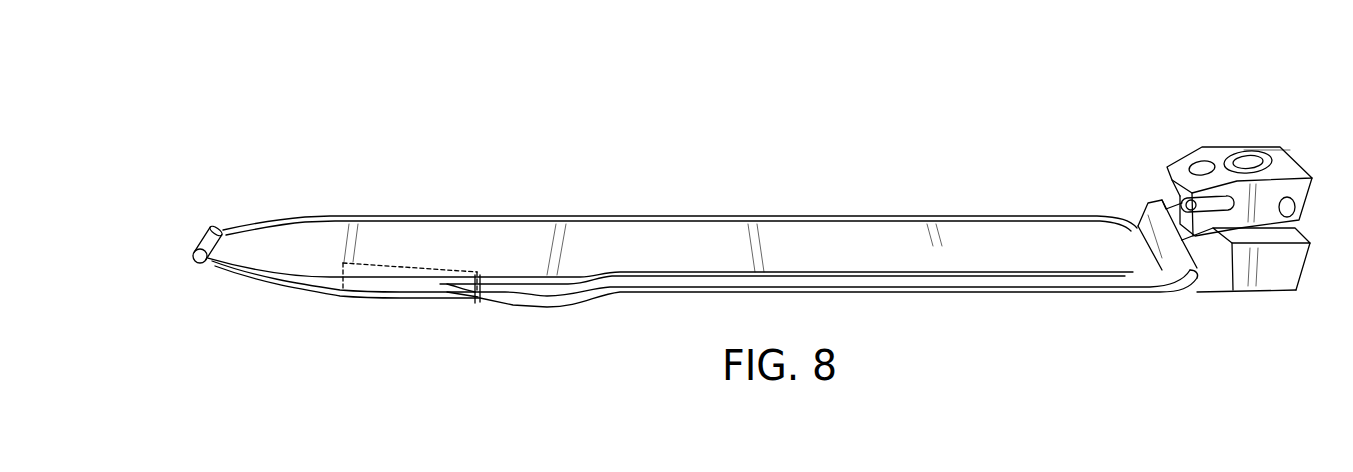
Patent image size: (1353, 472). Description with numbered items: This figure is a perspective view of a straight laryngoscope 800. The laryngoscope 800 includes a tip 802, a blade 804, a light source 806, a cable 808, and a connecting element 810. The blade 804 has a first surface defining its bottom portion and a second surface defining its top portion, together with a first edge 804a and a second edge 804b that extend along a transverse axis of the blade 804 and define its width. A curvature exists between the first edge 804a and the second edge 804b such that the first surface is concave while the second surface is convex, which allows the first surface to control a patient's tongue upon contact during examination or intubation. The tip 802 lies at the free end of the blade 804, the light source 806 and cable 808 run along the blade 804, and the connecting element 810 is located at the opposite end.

The laryngoscope 800 is at (469, 114).
The tip 802 is at (192, 238).
The blade 804 is at (393, 215).
The first edge 804a is at (782, 216).
The second edge 804b is at (786, 274).
The light source 806 is at (447, 303).
The cable 808 is at (553, 304).
The connecting element 810 is at (1157, 162).